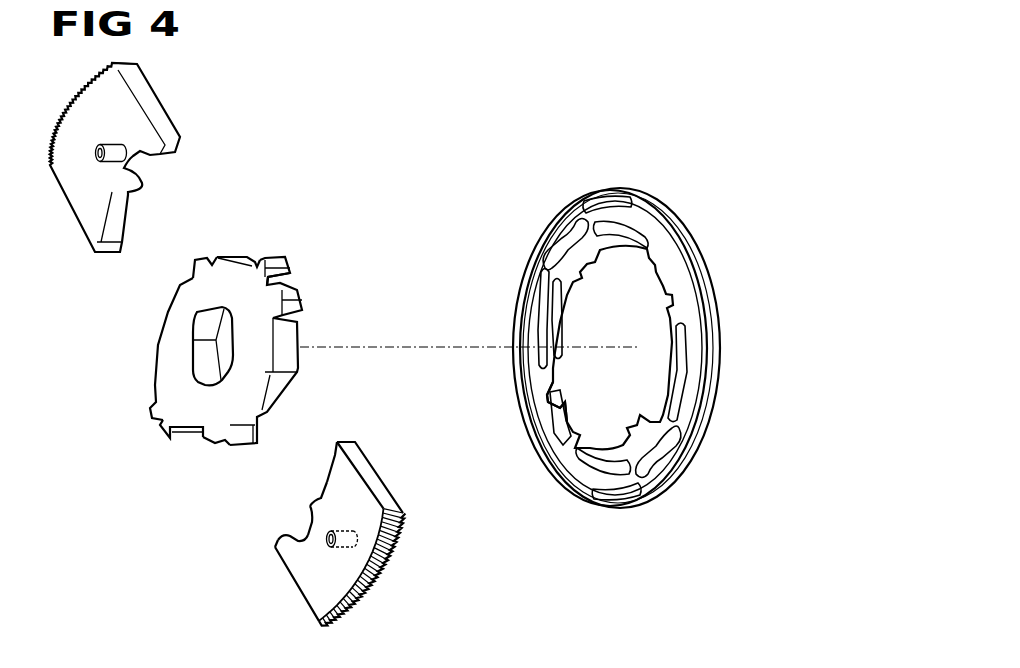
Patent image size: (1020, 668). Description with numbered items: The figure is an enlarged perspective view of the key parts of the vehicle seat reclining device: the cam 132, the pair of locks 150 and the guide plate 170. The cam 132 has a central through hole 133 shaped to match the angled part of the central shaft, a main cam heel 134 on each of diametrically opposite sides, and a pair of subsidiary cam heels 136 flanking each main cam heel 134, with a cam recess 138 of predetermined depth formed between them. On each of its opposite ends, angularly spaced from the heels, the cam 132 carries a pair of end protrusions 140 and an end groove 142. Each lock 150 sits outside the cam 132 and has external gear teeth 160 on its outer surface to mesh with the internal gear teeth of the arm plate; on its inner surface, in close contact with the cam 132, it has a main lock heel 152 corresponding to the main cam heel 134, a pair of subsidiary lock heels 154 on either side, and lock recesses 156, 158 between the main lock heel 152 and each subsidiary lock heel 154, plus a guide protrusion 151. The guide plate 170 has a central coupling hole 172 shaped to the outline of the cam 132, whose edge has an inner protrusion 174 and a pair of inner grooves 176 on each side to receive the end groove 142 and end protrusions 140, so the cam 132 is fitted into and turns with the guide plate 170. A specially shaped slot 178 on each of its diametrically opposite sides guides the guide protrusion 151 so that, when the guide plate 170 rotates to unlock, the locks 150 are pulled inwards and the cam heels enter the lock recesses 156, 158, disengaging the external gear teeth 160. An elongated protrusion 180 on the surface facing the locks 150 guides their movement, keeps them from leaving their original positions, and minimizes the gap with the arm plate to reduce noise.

The cam 132 is at (227, 327).
The through hole 133 is at (207, 356).
The main cam heel 134 is at (178, 284).
The subsidiary cam heels 136 is at (208, 258).
The cam recess 138 is at (195, 268).
The end protrusions 140 is at (272, 260).
The end groove 142 is at (298, 284).
The lock 150 is at (336, 517).
The guide protrusion 151 is at (348, 533).
The main lock heel 152 is at (310, 502).
The subsidiary lock heels 154 is at (341, 442).
The lock recess 156 is at (300, 530).
The lock recess 158 is at (327, 482).
The external gear teeth 160 is at (400, 541).
The guide plate 170 is at (570, 351).
The coupling hole 172 is at (596, 322).
The inner protrusion 174 is at (570, 406).
The inner grooves 176 is at (562, 433).
The specially shaped slot 178 is at (552, 247).
The elongated protrusion 180 is at (621, 228).